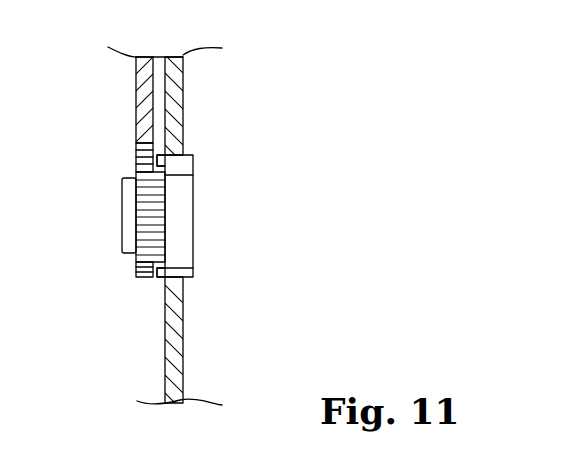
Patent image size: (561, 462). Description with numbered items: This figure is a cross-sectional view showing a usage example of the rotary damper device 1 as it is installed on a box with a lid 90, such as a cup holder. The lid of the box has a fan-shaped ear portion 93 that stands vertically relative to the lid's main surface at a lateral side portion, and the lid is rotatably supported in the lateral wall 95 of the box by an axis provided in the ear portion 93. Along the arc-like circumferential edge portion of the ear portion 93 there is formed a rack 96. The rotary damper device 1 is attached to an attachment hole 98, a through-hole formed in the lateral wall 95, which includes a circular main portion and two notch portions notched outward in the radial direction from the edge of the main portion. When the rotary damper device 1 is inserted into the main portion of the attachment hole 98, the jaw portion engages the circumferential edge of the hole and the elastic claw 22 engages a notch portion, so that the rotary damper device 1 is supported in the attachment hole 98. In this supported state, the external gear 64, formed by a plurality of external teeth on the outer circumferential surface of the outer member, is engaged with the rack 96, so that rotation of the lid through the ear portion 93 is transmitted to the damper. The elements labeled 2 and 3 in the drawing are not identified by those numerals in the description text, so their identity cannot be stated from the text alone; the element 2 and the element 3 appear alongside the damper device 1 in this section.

The rotary damper device 1 is at (218, 182).
The clip 2 is at (198, 240).
The fastening element 3 is at (118, 232).
The elastic claw 22 is at (191, 160).
The external gear 64 is at (147, 200).
The box with a lid 90 is at (185, 82).
The ear portion 93 is at (141, 91).
The lateral wall 95 is at (178, 356).
The rack 96 is at (137, 155).
The attachment hole 98 is at (192, 268).